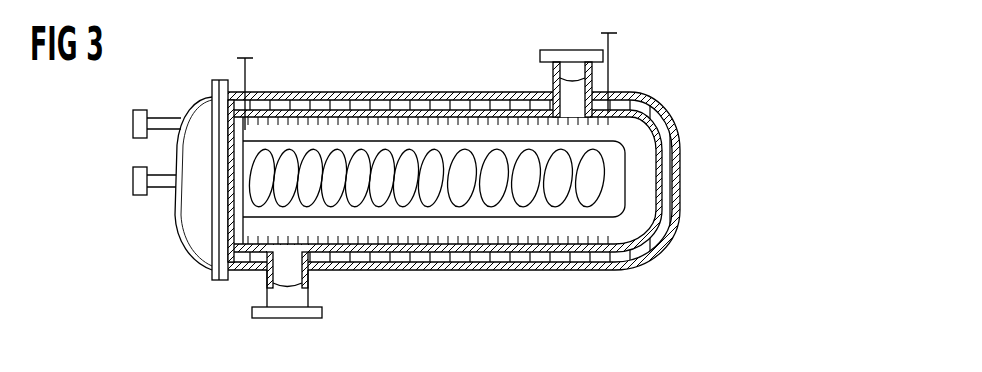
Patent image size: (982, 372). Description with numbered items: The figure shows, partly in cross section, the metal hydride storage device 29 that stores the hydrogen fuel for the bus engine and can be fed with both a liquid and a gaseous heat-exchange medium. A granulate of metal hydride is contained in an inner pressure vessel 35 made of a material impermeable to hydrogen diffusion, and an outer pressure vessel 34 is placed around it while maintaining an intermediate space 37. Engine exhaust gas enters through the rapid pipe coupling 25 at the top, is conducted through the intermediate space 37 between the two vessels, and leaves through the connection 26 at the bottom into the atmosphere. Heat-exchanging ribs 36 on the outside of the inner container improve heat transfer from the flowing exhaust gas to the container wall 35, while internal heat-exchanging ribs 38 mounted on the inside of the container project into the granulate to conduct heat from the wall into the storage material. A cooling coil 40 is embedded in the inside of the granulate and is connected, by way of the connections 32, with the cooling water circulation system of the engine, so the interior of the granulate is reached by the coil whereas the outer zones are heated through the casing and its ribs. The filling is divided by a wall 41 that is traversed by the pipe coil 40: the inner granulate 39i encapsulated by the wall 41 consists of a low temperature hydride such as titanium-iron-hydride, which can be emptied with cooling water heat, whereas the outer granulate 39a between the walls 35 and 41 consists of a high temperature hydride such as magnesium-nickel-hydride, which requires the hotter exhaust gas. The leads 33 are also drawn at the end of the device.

The rapid pipe coupling 25 is at (563, 50).
The connection 26 is at (280, 318).
The metal hydride storage device 29 is at (651, 88).
The rapid connections 32 is at (245, 58).
The electrical lead 33 is at (162, 182).
The outer pressure vessel 34 is at (347, 97).
The inner pressure vessel 35 is at (388, 95).
The heat-exchanging ribs 36 is at (492, 255).
The intermediate space 37 is at (415, 253).
The internal heat-exchanging ribs 38 is at (530, 233).
The granulate 39i is at (420, 153).
The granulate 39a is at (473, 123).
The cooling coil 40 is at (300, 142).
The wall 41 is at (347, 217).